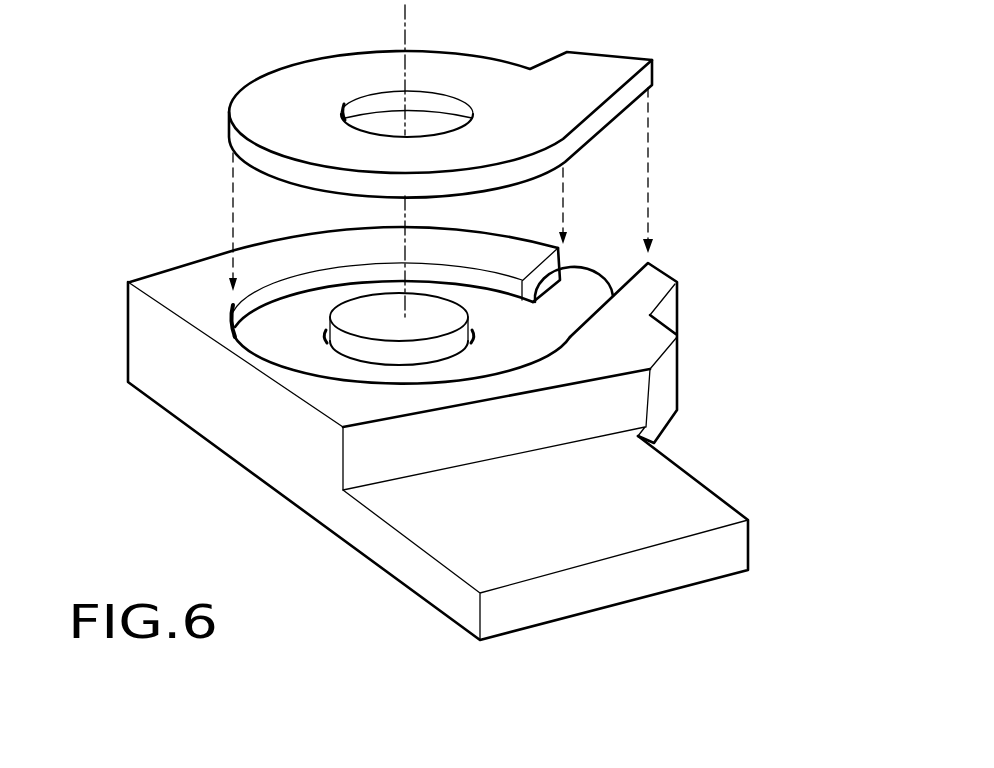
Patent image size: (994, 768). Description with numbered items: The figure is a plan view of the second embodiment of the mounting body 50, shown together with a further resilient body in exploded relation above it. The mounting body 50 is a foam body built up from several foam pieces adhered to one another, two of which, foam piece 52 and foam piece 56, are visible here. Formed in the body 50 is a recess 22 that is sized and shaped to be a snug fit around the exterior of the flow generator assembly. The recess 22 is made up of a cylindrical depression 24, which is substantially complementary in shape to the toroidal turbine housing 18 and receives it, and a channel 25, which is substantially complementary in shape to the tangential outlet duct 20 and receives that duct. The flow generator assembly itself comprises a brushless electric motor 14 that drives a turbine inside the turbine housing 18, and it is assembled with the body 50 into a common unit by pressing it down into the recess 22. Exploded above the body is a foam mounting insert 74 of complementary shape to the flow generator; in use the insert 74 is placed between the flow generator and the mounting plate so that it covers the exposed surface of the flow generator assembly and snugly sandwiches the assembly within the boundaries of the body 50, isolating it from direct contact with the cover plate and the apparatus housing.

The mounting body 50 is at (722, 199).
The foam mounting insert 74 is at (269, 86).
The foam piece 56 is at (694, 494).
The toroidal turbine housing 18 is at (487, 360).
The foam piece 52 is at (498, 250).
The cylindrical depression 24 is at (300, 278).
The recess 22 is at (241, 336).
The brushless electric motor 14 is at (431, 317).
The channel 25 is at (562, 277).
The tangential outlet duct 20 is at (578, 304).